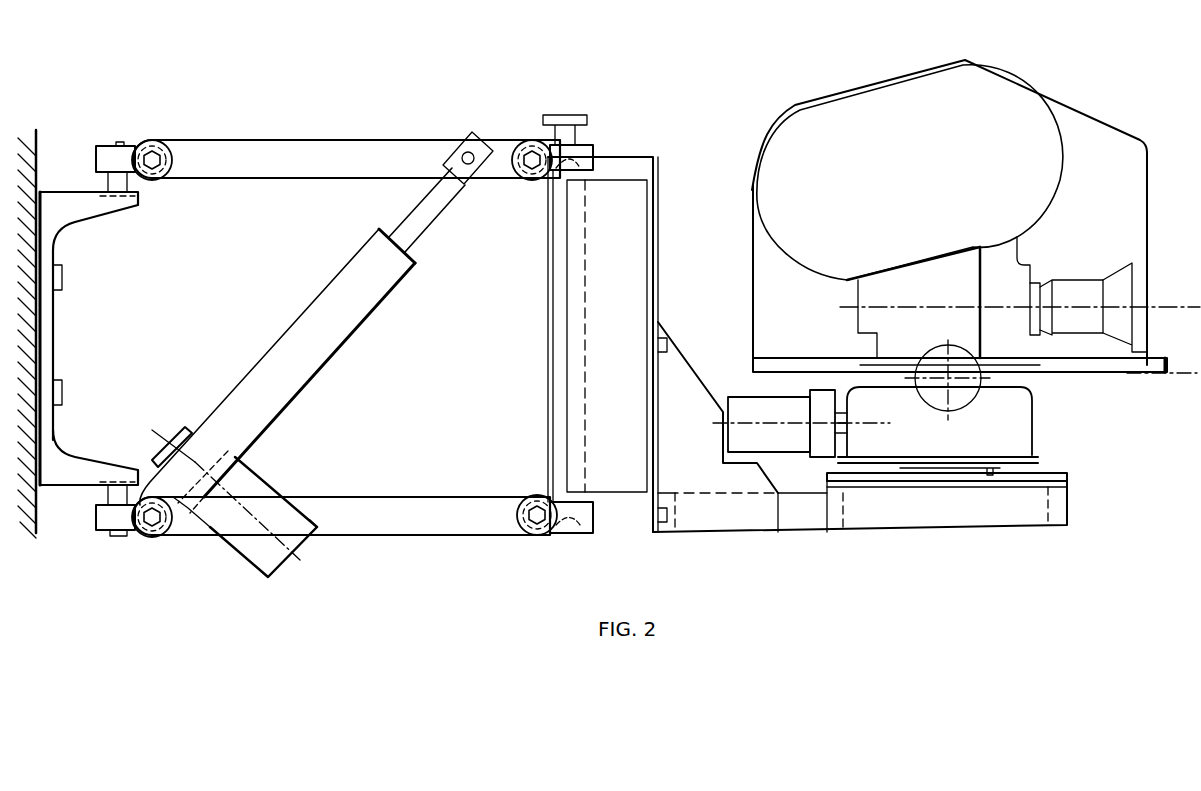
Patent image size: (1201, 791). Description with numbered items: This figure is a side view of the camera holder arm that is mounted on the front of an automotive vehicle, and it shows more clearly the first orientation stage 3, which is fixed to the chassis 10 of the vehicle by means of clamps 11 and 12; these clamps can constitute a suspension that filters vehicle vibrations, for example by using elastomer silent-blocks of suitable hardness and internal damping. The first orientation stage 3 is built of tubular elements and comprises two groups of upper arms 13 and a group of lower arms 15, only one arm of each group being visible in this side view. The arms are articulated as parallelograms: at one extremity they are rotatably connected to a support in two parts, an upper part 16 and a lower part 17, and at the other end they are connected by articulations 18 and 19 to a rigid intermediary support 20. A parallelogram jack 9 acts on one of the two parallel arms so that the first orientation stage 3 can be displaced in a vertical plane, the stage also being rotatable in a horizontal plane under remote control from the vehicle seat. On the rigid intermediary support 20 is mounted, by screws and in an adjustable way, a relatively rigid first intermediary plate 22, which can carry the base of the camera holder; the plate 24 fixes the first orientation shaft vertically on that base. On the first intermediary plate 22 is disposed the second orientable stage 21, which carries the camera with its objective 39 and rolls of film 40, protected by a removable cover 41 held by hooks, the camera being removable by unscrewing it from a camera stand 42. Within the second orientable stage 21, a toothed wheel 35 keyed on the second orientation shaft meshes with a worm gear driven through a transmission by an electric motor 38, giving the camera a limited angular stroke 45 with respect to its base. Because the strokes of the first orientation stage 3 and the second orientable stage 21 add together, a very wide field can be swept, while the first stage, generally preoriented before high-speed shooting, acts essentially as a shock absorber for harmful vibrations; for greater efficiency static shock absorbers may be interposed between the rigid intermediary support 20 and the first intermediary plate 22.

The first orientation stage 3 is at (378, 538).
The parallelogram jack 9 is at (318, 362).
The chassis 10 is at (44, 498).
The clamp 11 is at (78, 212).
The clamp 12 is at (78, 462).
The upper arm 13 is at (272, 157).
The lower arm 15 is at (432, 522).
The upper part of support 16 is at (108, 160).
The lower part of support 17 is at (117, 513).
The articulation 18 is at (532, 150).
The articulation 19 is at (537, 520).
The rigid intermediary support 20 is at (605, 205).
The second orientable stage 21 is at (745, 197).
The first intermediary plate 22 is at (970, 510).
The plate 24 is at (990, 472).
The toothed wheel 35 is at (960, 395).
The electric motor 38 is at (783, 440).
The objective 39 is at (1118, 285).
The rolls of film 40 is at (1035, 148).
The removable cover 41 is at (1148, 150).
The camera stand 42 is at (1030, 370).
The stroke 45 is at (1158, 447).